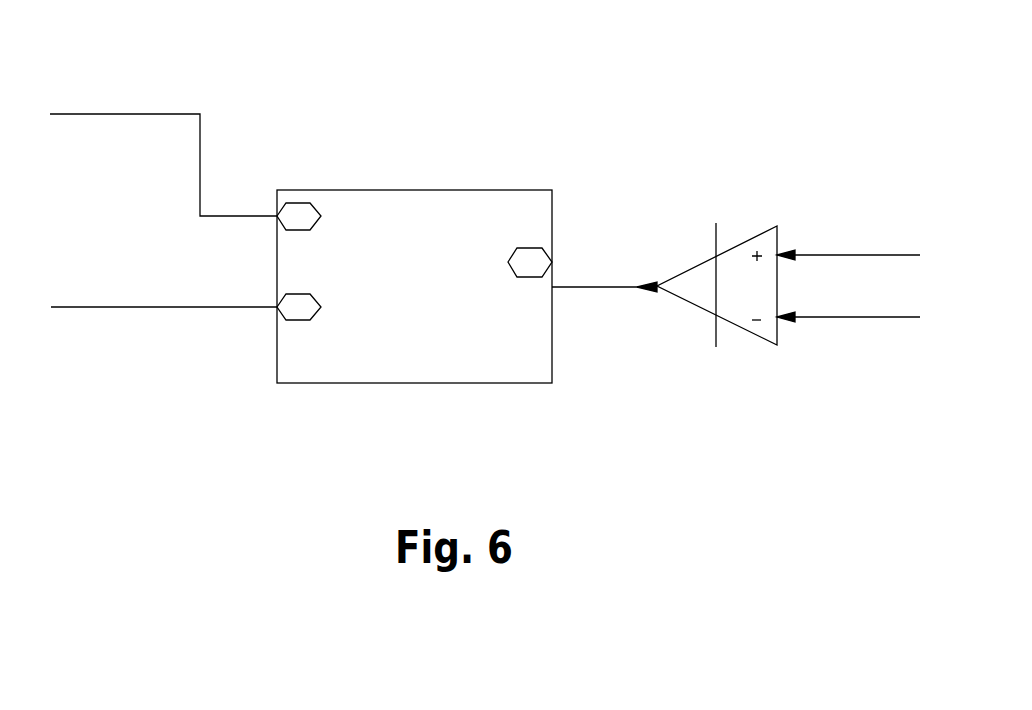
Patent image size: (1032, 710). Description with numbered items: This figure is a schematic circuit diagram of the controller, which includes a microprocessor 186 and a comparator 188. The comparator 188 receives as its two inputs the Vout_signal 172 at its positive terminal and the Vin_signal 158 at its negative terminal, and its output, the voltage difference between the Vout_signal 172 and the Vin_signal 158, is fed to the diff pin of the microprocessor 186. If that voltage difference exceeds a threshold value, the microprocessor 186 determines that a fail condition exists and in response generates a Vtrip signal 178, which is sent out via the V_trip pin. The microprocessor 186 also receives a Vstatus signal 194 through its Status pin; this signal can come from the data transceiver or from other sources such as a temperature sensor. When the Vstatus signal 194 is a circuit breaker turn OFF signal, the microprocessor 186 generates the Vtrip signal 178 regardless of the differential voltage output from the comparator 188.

The Vtrip signal 178 is at (66, 64).
The Vstatus signal 194 is at (128, 308).
The microprocessor 186 is at (415, 384).
The comparator 188 is at (752, 335).
The Vout_signal 172 is at (883, 205).
The Vin_signal 158 is at (878, 318).